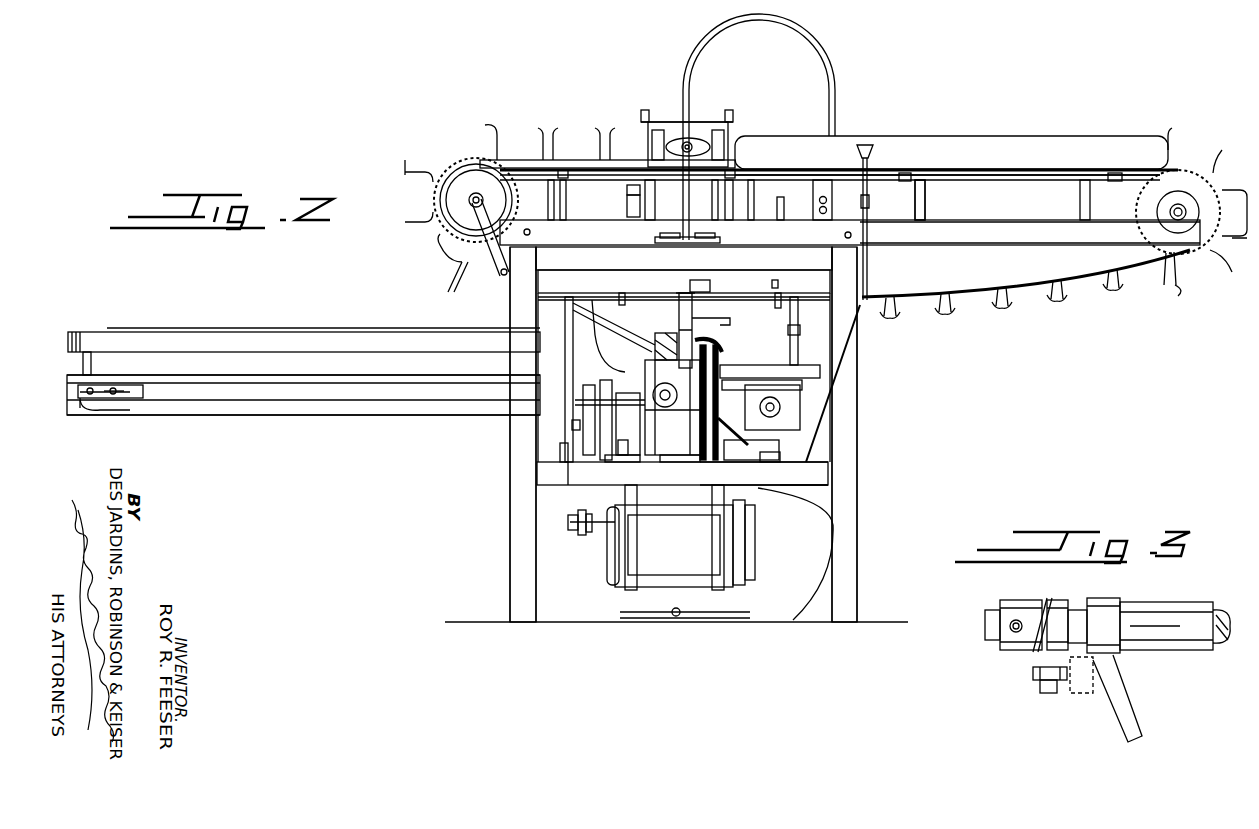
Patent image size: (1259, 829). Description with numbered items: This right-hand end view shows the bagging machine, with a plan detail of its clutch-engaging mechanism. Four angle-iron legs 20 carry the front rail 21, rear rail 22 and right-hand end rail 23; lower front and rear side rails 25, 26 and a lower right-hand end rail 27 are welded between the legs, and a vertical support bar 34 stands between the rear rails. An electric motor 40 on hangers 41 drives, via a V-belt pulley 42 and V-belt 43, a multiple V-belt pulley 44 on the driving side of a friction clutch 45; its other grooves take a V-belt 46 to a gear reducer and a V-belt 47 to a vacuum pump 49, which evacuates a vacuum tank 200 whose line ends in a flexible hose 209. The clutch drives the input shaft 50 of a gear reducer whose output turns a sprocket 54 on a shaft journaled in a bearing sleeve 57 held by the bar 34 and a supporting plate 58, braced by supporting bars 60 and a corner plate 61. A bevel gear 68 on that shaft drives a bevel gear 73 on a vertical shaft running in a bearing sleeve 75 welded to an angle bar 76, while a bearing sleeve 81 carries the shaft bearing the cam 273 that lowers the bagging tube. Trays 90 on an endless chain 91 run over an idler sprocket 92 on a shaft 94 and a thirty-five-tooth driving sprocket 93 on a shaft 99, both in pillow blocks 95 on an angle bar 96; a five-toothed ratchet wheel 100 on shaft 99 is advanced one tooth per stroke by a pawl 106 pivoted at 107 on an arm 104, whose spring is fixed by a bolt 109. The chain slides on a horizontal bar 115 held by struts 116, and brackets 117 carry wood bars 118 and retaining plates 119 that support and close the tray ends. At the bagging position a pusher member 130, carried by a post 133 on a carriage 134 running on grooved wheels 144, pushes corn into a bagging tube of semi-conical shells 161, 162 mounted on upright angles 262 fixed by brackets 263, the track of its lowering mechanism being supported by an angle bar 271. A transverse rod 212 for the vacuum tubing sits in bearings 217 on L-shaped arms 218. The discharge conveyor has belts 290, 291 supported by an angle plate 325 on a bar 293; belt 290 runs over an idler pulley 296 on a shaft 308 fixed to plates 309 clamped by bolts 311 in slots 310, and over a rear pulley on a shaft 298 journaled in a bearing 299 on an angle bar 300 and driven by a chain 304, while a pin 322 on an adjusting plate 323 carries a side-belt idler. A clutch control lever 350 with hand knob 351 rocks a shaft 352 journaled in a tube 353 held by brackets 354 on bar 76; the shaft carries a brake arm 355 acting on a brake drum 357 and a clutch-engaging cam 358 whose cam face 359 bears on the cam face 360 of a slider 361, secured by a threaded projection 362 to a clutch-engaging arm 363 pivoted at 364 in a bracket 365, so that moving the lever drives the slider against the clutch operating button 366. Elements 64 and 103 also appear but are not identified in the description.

In FIG. 2, the legs 20 is at (857, 557).
In FIG. 2, the front rail 21 is at (540, 258).
In FIG. 2, the rear rail 22 is at (833, 258).
In FIG. 2, the right-hand end rail 23 is at (606, 252).
In FIG. 2, the lower front side rail 25 is at (537, 473).
In FIG. 2, the lower rear side rail 26 is at (830, 470).
In FIG. 2, the lower right-hand end rail 27 is at (815, 481).
In FIG. 2, the vertical support bar 34 is at (822, 434).
In FIG. 2, the electric motor 40 is at (678, 561).
In FIG. 2, the hangers 41 is at (718, 513).
In FIG. 2, the V-belt pulley 42 is at (577, 531).
In FIG. 2, the V-belt 43 is at (578, 514).
In FIG. 2, the multiple V-belt pulley 44 is at (585, 396).
In FIG. 2, the friction clutch 45 is at (615, 470).
In FIG. 2, the V-belt 46 is at (595, 436).
In FIG. 2, the V-belt 47 is at (575, 383).
In FIG. 2, the vacuum pump 49 is at (670, 462).
In FIG. 2, the input shaft 50 is at (645, 435).
In FIG. 2, the sprocket 54 is at (722, 366).
In FIG. 2, the bearing sleeve 57 is at (820, 373).
In FIG. 2, the supporting plate 58 is at (765, 300).
In FIG. 2, the supporting bars 60 is at (680, 298).
In FIG. 2, the corner plate 61 is at (730, 325).
In FIG. 2, the hanger bolt 64 is at (714, 488).
In FIG. 2, the bevel gear 68 is at (737, 352).
In FIG. 2, the bevel gear 73 is at (716, 342).
In FIG. 2, the bearing sleeve 75 is at (692, 311).
In FIG. 2, the angle bar 76 is at (825, 292).
In FIG. 2, the bearing sleeve 81 is at (797, 331).
In FIG. 2, the trays 90 is at (1176, 284).
In FIG. 2, the endless chain 91 is at (1220, 190).
In FIG. 2, the idler sprocket 92 is at (1134, 204).
In FIG. 2, the driving sprocket 93 is at (503, 180).
In FIG. 2, the shaft 94 is at (1186, 218).
In FIG. 2, the pillow blocks 95 is at (1186, 201).
In FIG. 2, the angle bar 96 is at (1047, 240).
In FIG. 2, the shaft 99 is at (472, 196).
In FIG. 2, the ratchet wheel 100 is at (453, 215).
In FIG. 2, the connecting rods 103 is at (598, 327).
In FIG. 2, the arm 104 is at (503, 278).
In FIG. 2, the pawl 106 is at (505, 216).
In FIG. 2, the pivot 107 is at (478, 250).
In FIG. 2, the bolt 109 is at (462, 278).
In FIG. 2, the horizontal bar 115 is at (965, 178).
In FIG. 2, the struts 116 is at (928, 205).
In FIG. 2, the brackets 117 is at (905, 174).
In FIG. 2, the wood bars 118 is at (592, 160).
In FIG. 2, the retaining plates 119 is at (1078, 145).
In FIG. 2, the pusher member 130 is at (705, 165).
In FIG. 2, the post 133 is at (660, 232).
In FIG. 2, the carriage 134 is at (715, 233).
In FIG. 2, the grooved wheel 144 is at (672, 243).
In FIG. 2, the semi-conical shell 161 is at (724, 150).
In FIG. 2, the semi-conical shell 162 is at (652, 150).
In FIG. 2, the vacuum tank 200 is at (808, 492).
In FIG. 2, the flexible hose 209 is at (698, 44).
In FIG. 2, the transverse rod 212 is at (729, 118).
In FIG. 2, the bearings 217 is at (646, 118).
In FIG. 2, the L-shaped arms 218 is at (648, 138).
In FIG. 2, the upright angles 262 is at (824, 183).
In FIG. 2, the brackets 263 is at (831, 213).
In FIG. 2, the angle bar 271 is at (787, 212).
In FIG. 2, the cam 273 is at (798, 350).
In FIG. 2, the endless belt 290 is at (360, 418).
In FIG. 2, the endless belt 291 is at (218, 342).
In FIG. 2, the bar 293 is at (232, 400).
In FIG. 2, the pulley 296 is at (94, 410).
In FIG. 2, the shaft 298 is at (800, 404).
In FIG. 2, the bearing 299 is at (772, 440).
In FIG. 2, the horizontal angle bar 300 is at (770, 462).
In FIG. 2, the chain 304 is at (745, 410).
In FIG. 2, the shaft 308 is at (105, 420).
In FIG. 2, the plates 309 is at (143, 391).
In FIG. 2, the elongated slots 310 is at (118, 398).
In FIG. 2, the bolts 311 is at (115, 405).
In FIG. 2, the pin 322 is at (91, 363).
In FIG. 2, the adjusting plate 323 is at (143, 375).
In FIG. 2, the angle plate 325 is at (332, 332).
In FIG. 2, the clutch control lever 350 is at (869, 200).
In FIG. 2, the hand knob 351 is at (866, 146).
In FIG. 5, the shaft 352 is at (1222, 610).
In FIG. 2, the tube 353 is at (720, 280).
In FIG. 5, the tube 353 is at (1168, 604).
In FIG. 2, the brackets 354 is at (621, 295).
In FIG. 2, the brake arm 355 is at (618, 368).
In FIG. 5, the brake arm 355 is at (1125, 712).
In FIG. 2, the brake drum 357 is at (622, 462).
In FIG. 5, the clutch-engaging cam 358 is at (1022, 600).
In FIG. 5, the cam face 359 is at (1033, 656).
In FIG. 5, the cam face 360 is at (1037, 639).
In FIG. 5, the slider 361 is at (1068, 590).
In FIG. 5, the threaded projection 362 is at (1045, 693).
In FIG. 2, the clutch-engaging arm 363 is at (565, 322).
In FIG. 5, the clutch-engaging arm 363 is at (1033, 678).
In FIG. 2, the pivot 364 is at (560, 448).
In FIG. 2, the bracket 365 is at (570, 474).
In FIG. 2, the operating button 366 is at (572, 426).
In FIG. 5, the operating button 366 is at (1088, 700).